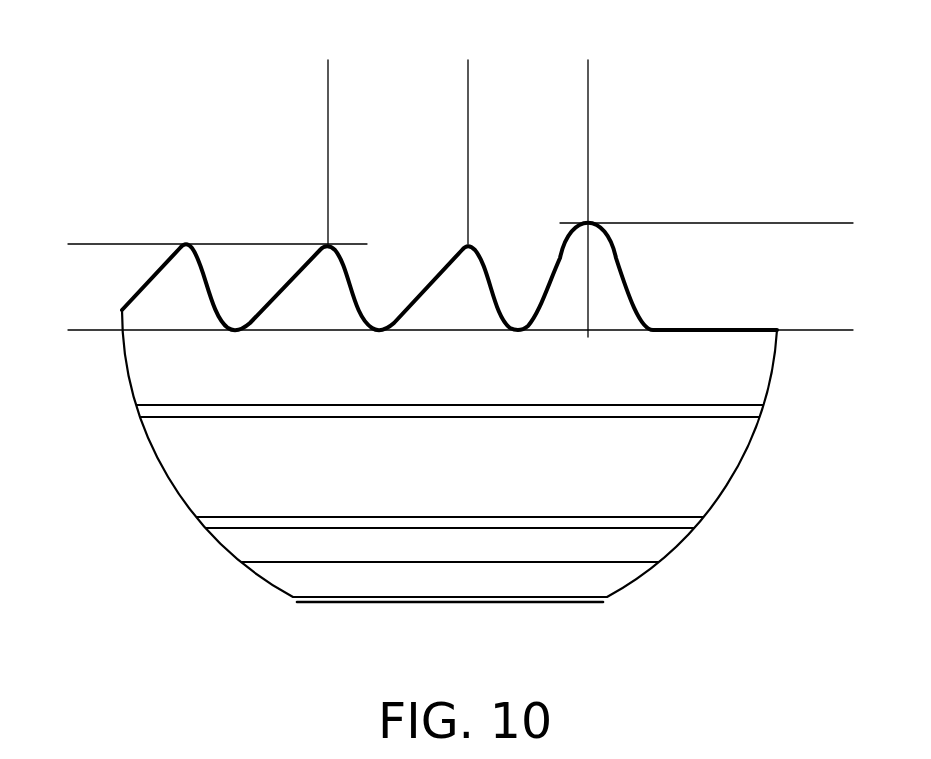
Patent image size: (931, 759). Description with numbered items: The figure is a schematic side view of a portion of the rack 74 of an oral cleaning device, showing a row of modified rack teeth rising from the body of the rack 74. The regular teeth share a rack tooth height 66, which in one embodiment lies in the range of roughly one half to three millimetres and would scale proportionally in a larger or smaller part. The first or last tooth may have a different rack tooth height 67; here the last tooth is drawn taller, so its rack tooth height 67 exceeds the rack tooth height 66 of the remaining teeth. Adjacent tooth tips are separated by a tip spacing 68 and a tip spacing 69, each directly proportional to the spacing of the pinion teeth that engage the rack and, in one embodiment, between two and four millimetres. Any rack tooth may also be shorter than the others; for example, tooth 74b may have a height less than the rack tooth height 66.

The rack tooth height 66 is at (79, 256).
The rack tooth height of last tooth 67 is at (843, 235).
The tip spacing 68 is at (456, 65).
The tip spacing 69 is at (480, 65).
The rack 74 is at (757, 363).
The tooth 74b is at (453, 272).